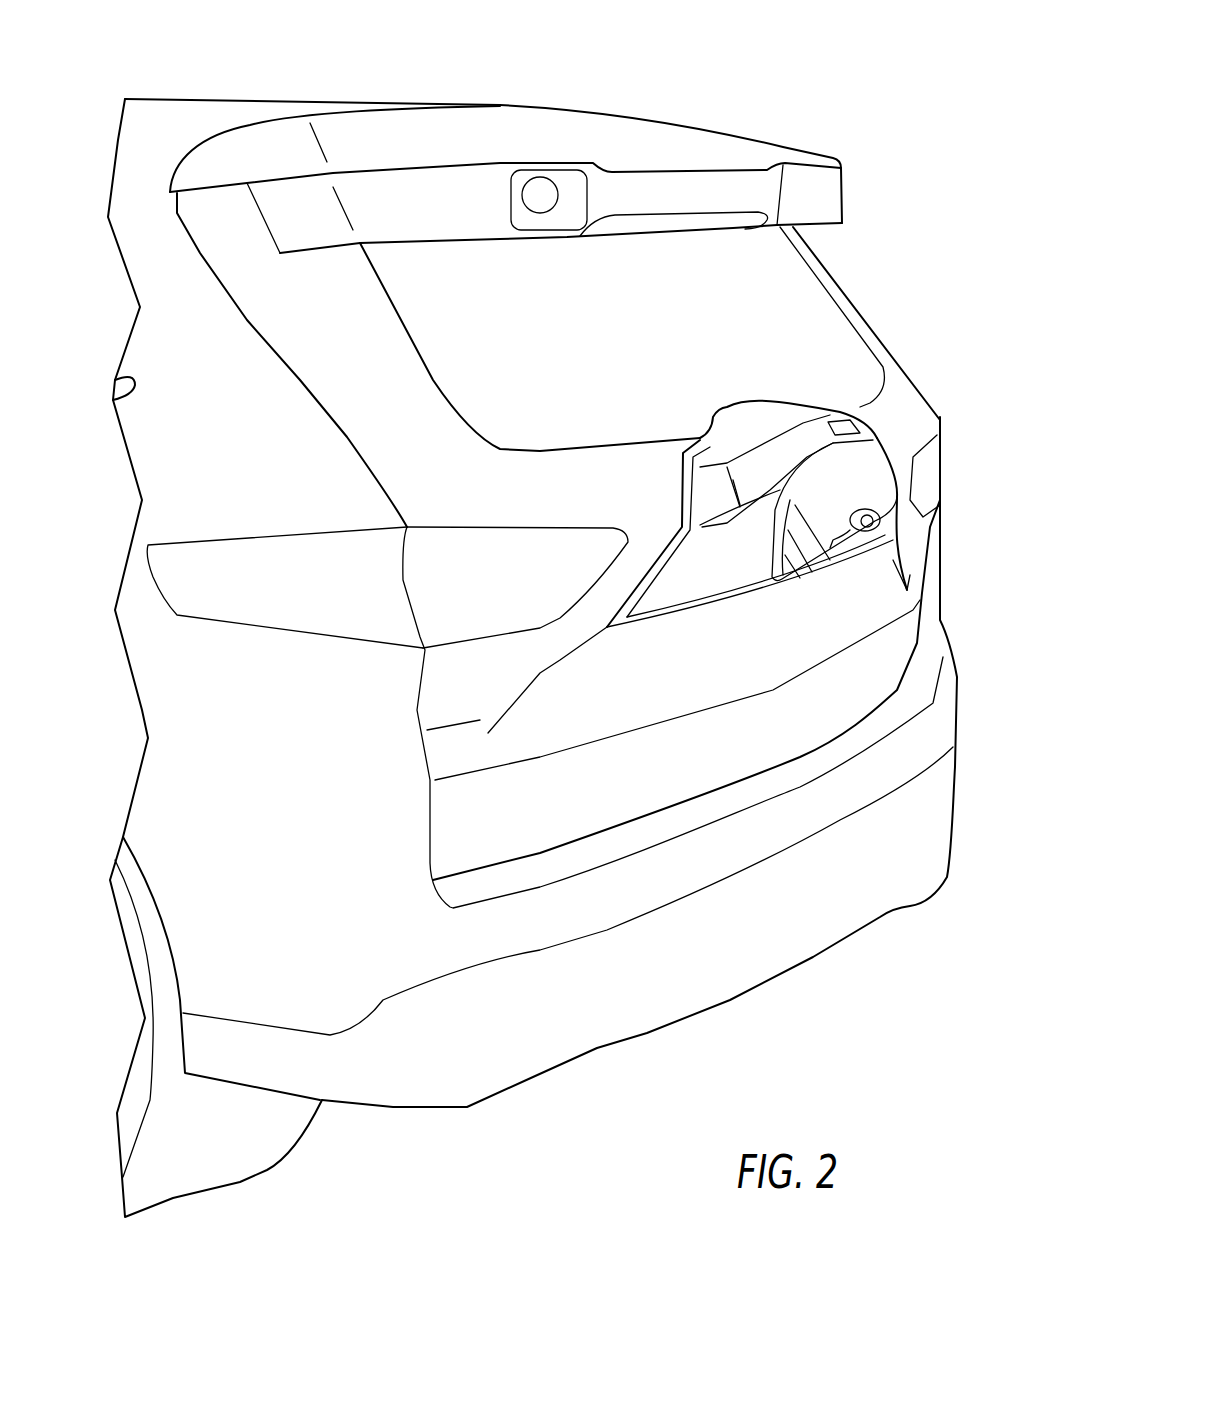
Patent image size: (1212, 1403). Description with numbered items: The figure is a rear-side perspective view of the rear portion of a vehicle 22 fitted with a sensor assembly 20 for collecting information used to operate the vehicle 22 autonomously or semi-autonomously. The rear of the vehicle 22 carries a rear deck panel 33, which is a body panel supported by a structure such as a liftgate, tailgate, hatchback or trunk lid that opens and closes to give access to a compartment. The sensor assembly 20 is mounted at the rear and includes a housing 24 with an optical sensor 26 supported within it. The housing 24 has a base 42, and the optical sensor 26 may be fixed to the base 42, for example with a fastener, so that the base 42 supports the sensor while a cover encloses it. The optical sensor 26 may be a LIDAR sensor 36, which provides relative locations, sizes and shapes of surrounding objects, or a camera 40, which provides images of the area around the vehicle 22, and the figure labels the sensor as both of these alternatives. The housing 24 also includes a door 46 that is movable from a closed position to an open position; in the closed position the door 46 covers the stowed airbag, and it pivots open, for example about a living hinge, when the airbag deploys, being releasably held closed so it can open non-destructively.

The vehicle 22 is at (702, 77).
The rear deck panel 33 is at (580, 478).
The sensor assembly 20 is at (868, 410).
The housing 24 is at (753, 410).
The door 46 is at (847, 420).
The optical sensor 26 is at (897, 542).
The camera 40 is at (893, 533).
The LIDAR sensor 36 is at (833, 543).
The base 42 is at (870, 467).